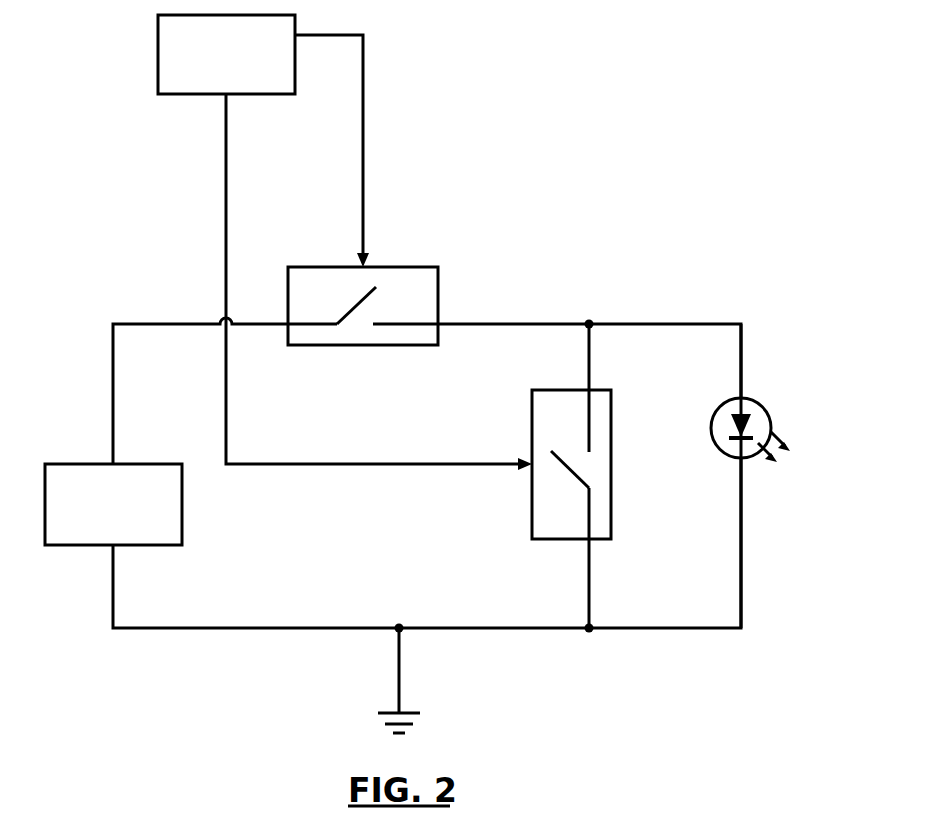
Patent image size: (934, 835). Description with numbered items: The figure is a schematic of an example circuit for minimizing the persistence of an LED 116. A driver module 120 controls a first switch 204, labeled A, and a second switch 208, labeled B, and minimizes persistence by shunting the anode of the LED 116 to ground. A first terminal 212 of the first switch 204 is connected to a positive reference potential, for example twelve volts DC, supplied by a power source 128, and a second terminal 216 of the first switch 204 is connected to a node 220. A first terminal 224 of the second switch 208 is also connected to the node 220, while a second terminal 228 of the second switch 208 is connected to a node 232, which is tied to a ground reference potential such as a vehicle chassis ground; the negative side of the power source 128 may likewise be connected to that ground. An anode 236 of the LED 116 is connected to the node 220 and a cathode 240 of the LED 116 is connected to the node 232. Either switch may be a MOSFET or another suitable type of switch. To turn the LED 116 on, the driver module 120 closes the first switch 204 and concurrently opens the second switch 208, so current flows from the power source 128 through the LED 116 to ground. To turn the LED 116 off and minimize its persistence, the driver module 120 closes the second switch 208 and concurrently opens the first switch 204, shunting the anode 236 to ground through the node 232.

The LED 116 is at (801, 398).
The driver module 120 is at (201, 95).
The power source 128 is at (68, 547).
The first switch 204 is at (364, 345).
The second switch 208 is at (532, 524).
The first terminal of the first switch 212 is at (290, 326).
The second terminal of the first switch 216 is at (438, 329).
The node 220 is at (589, 324).
The first terminal of the second switch 224 is at (589, 390).
The second terminal of the second switch 228 is at (589, 540).
The node 232 is at (589, 628).
The anode of the LED 236 is at (741, 390).
The cathode of the LED 240 is at (741, 468).